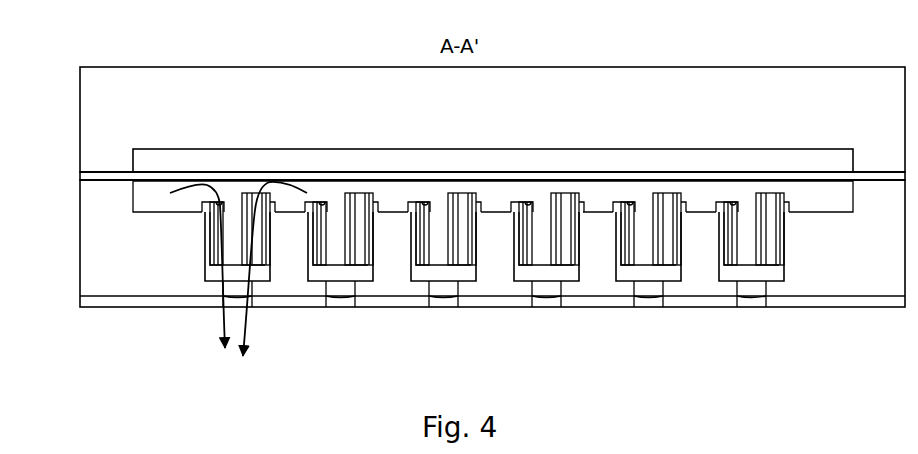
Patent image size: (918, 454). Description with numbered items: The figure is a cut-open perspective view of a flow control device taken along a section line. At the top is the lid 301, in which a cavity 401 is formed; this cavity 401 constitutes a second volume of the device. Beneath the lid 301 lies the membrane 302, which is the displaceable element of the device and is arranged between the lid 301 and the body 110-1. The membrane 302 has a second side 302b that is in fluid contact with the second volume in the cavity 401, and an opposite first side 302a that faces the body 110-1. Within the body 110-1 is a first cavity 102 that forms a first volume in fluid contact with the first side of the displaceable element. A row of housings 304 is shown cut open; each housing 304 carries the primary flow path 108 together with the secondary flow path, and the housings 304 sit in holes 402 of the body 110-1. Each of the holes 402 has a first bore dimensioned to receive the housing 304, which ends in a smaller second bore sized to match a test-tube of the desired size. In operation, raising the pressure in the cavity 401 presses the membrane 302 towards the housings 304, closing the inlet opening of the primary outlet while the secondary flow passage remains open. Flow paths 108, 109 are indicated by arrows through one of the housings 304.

The lid 301 is at (107, 67).
The membrane 302 is at (93, 174).
The first side of the displaceable element 302a is at (816, 184).
The second side of the displaceable element 302b is at (797, 168).
The housing 304 is at (333, 182).
The cavity 401 is at (172, 162).
The first cavity 102 is at (145, 206).
The body 110-1 is at (80, 283).
The holes 402 is at (341, 268).
The primary flow path 108 is at (248, 341).
The signal path 109 is at (220, 341).